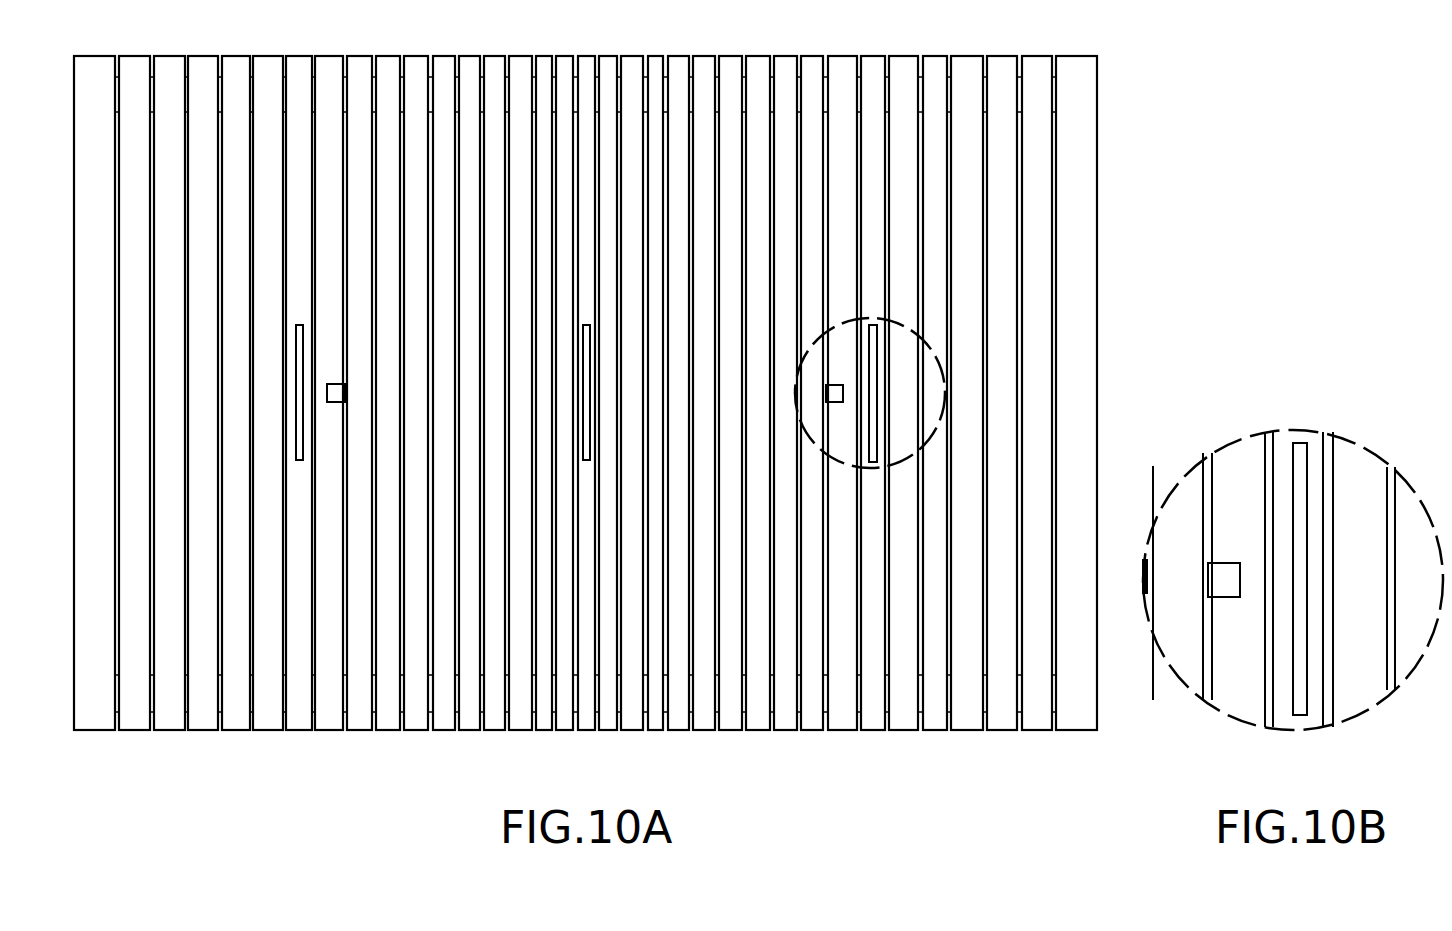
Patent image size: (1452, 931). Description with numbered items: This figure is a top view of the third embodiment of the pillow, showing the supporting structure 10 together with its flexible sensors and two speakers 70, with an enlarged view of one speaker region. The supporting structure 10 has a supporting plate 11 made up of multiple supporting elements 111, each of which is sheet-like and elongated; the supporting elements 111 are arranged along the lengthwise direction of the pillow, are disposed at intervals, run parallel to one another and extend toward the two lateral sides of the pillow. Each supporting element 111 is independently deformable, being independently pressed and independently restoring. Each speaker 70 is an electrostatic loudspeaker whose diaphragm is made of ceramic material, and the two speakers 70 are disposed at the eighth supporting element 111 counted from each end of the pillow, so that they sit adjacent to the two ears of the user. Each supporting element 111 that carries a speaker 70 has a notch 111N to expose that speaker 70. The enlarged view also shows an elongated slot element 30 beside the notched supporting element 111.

In FIG. 10A, the supporting structure 10 is at (644, 393).
In FIG. 10A, the supporting plate 11 is at (639, 393).
In FIG. 10A, the supporting element 111 is at (1078, 197).
In FIG. 10B, the notch 111N is at (1213, 583).
In FIG. 10B, the speaker 70 is at (1217, 572).
In FIG. 10B, the slot 30 is at (1300, 455).